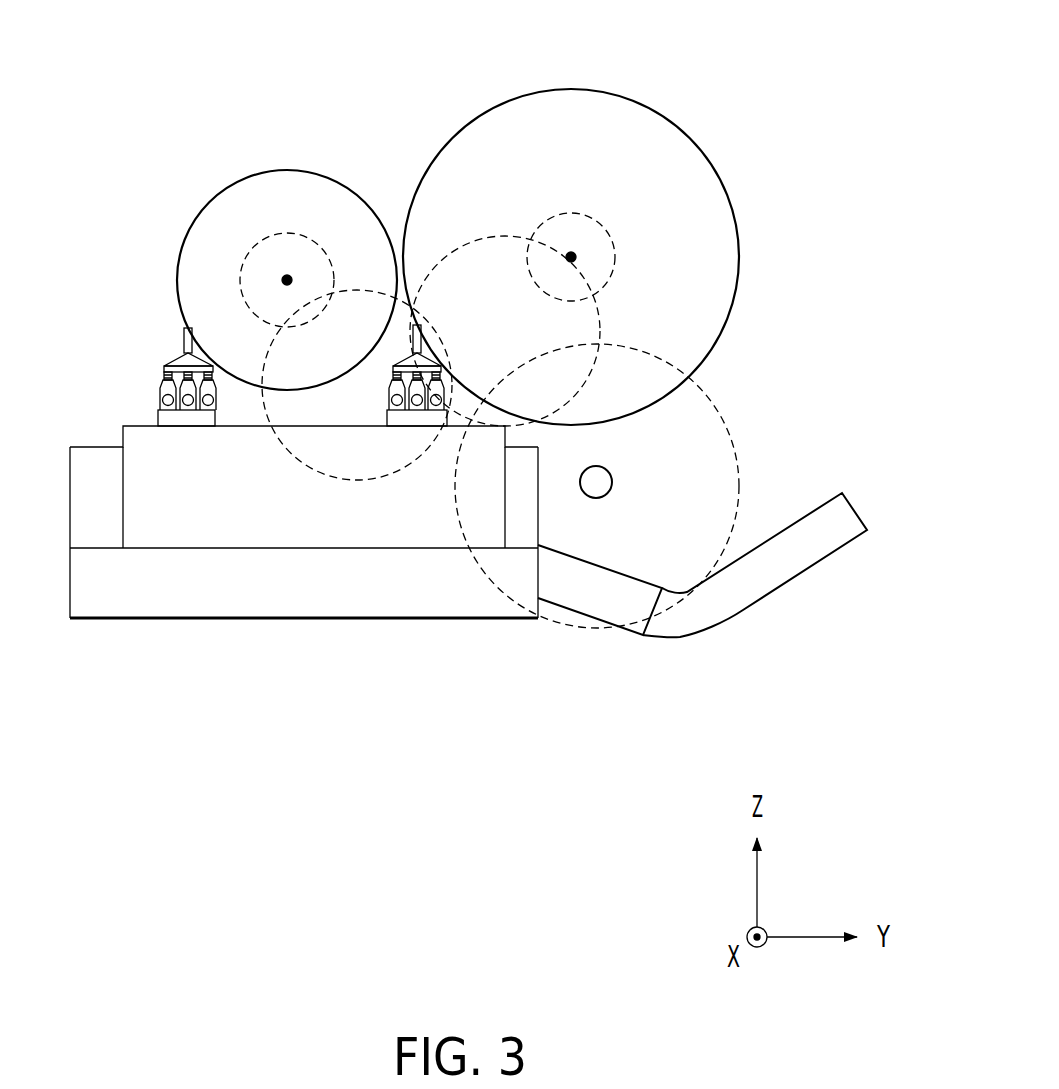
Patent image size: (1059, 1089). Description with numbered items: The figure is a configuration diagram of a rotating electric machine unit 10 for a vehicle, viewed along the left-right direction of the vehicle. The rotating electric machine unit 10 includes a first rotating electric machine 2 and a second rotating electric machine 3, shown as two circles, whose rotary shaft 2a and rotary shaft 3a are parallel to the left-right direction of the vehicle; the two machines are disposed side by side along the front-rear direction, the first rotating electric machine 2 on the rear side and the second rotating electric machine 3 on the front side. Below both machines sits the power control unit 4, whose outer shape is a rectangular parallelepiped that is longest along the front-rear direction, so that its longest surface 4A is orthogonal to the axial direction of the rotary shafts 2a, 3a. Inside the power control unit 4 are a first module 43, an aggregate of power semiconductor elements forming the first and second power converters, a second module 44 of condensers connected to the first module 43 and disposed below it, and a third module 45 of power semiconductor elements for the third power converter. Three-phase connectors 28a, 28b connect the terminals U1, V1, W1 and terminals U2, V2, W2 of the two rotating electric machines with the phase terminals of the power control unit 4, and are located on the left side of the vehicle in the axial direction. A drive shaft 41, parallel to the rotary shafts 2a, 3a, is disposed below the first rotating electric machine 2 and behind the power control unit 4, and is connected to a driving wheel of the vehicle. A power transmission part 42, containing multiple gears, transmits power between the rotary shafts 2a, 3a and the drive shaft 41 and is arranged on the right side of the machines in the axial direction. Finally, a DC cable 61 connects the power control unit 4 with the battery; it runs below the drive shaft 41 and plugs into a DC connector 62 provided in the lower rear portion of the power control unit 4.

The rotating electric machine unit 10 is at (778, 96).
The first rotating electric machine 2 is at (630, 98).
The rotary shaft 2a is at (573, 250).
The second rotating electric machine 3 is at (290, 169).
The rotary shaft 3a is at (287, 272).
The power control unit 4 is at (122, 424).
The longest surface 4A is at (153, 547).
The drive shaft 41 is at (610, 470).
The power transmission part 42 is at (800, 282).
The first module 43 is at (240, 532).
The second module 44 is at (422, 598).
The third module 45 is at (515, 538).
The three-phase connector 28a is at (401, 430).
The three-phase connector 28b is at (178, 428).
The DC cable 61 is at (757, 598).
The DC connector 62 is at (620, 603).
The terminal U1 is at (260, 284).
The terminal V1 is at (260, 284).
The terminal W1 is at (395, 358).
The terminal U2 is at (124, 336).
The terminal V2 is at (124, 336).
The terminal W2 is at (172, 358).